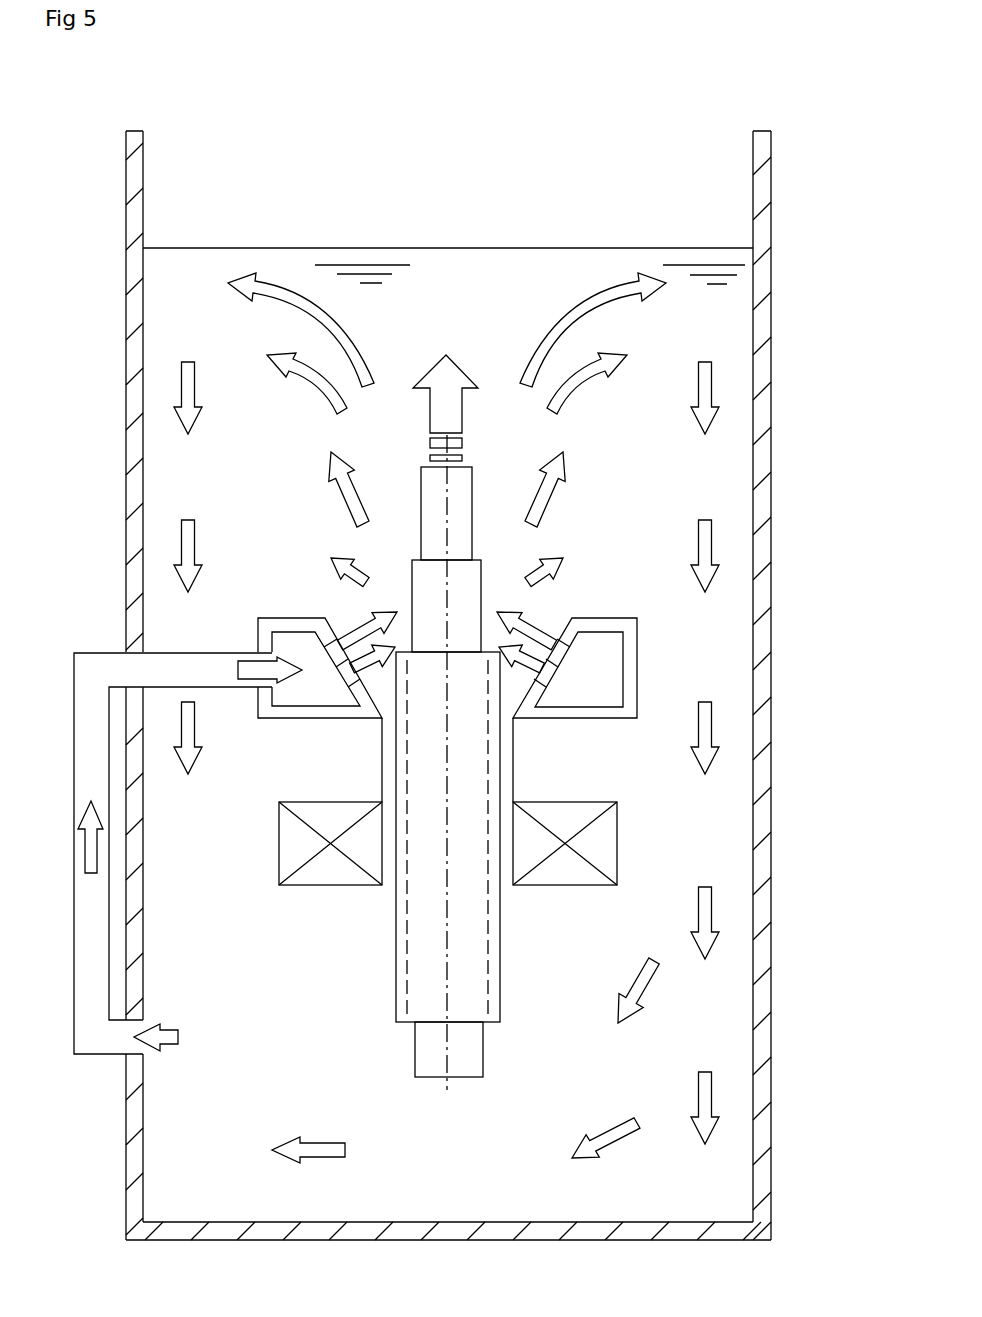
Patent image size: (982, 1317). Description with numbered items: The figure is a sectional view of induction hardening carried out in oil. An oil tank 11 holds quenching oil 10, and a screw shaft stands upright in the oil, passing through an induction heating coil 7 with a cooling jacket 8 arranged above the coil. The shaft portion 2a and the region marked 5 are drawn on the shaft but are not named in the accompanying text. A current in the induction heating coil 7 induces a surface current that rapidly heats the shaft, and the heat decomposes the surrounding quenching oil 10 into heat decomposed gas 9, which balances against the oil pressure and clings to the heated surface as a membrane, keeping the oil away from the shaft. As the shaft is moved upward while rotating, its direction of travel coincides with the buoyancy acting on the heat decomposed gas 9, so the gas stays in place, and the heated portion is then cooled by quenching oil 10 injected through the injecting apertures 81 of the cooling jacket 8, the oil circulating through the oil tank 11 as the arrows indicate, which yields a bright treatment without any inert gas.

The cooling jacket 8 is at (632, 633).
The injecting apertures 81 is at (552, 688).
The heat decomposed gas 9 is at (510, 785).
The induction heating coil 7 is at (612, 868).
The rotor 2a is at (502, 942).
The motor 5 is at (490, 987).
The oil tank 11 is at (767, 1097).
The quenching oil 10 is at (710, 1162).